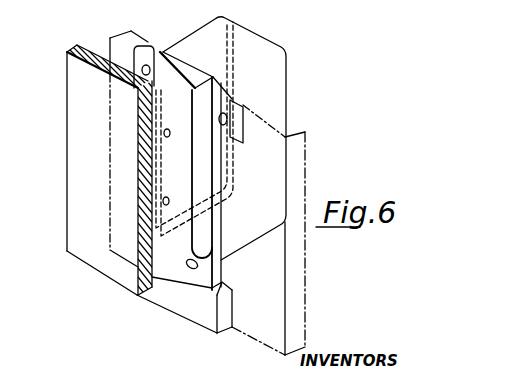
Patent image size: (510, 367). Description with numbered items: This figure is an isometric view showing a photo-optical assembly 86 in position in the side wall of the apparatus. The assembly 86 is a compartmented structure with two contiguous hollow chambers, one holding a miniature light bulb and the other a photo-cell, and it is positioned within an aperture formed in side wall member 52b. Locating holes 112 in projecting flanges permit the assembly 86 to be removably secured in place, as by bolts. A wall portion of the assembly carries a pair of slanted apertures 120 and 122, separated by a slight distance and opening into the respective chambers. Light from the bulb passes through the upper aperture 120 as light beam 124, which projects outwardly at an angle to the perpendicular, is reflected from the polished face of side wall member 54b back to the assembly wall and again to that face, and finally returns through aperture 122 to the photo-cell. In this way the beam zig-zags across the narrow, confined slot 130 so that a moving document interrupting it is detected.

The side wall member 54b is at (82, 145).
The passageway or slot 130 is at (110, 44).
The locating holes 112 is at (142, 70).
The photo-optical assembly 86 is at (245, 153).
The light beam 124 is at (165, 166).
The aperture 120 is at (163, 133).
The aperture 122 is at (163, 201).
The side wall member 52b is at (307, 160).